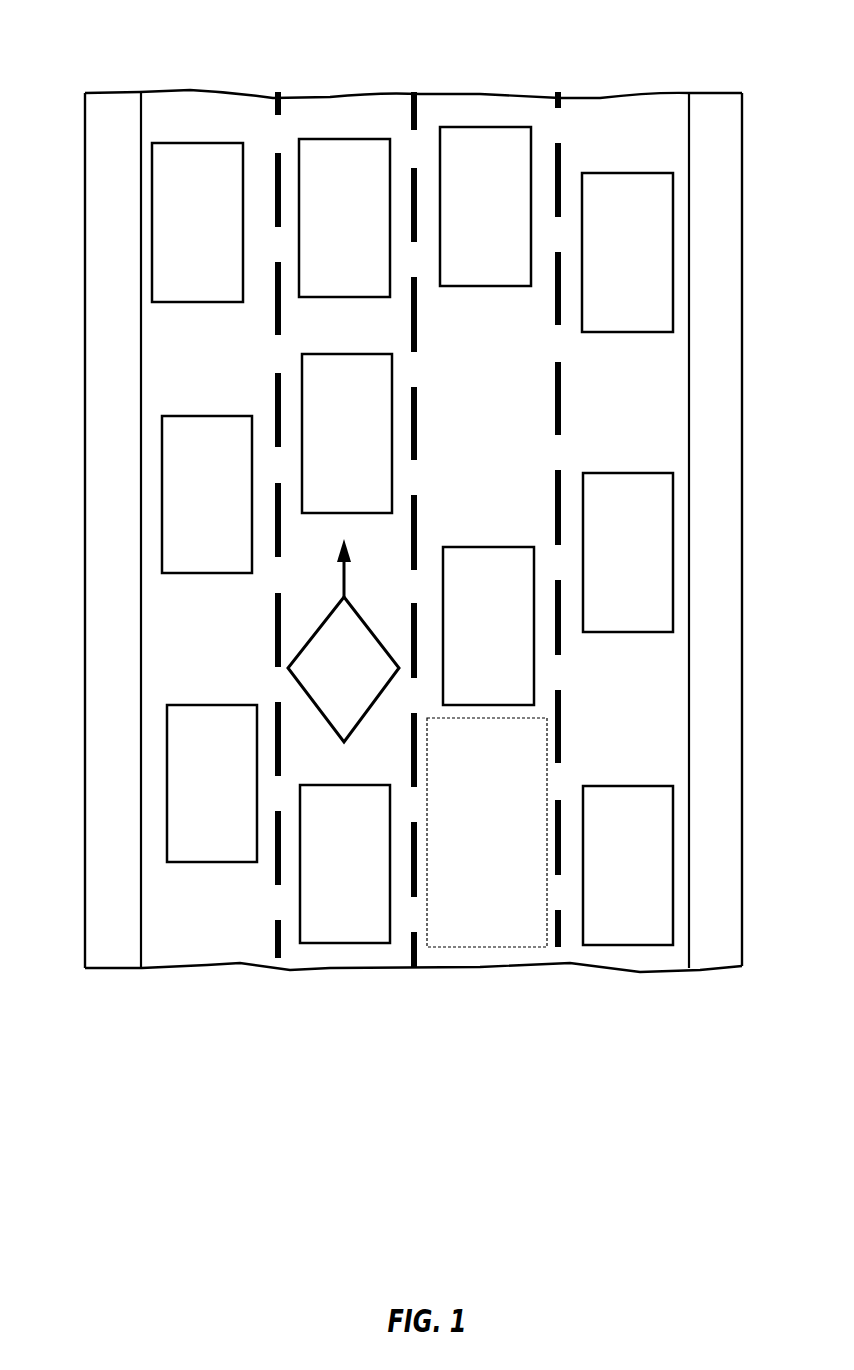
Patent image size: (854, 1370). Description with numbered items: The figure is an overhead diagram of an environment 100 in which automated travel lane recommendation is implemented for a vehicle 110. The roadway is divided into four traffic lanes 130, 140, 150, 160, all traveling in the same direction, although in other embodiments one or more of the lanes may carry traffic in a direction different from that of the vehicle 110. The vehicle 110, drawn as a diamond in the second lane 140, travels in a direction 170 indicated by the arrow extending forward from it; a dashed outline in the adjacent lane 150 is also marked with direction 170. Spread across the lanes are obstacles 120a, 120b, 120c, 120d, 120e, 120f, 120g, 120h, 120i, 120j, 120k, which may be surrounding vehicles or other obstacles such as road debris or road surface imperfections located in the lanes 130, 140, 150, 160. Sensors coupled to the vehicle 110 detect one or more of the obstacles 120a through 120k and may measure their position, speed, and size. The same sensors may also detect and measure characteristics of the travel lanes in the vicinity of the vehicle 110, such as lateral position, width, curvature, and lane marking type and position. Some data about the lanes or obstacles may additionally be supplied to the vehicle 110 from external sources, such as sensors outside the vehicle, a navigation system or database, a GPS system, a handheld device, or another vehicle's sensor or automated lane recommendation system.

The environment 100 is at (117, 66).
The vehicle 110 is at (327, 689).
The obstacle 120a is at (175, 246).
The obstacle 120b is at (321, 242).
The obstacle 120c is at (462, 231).
The obstacle 120d is at (604, 276).
The obstacle 120e is at (184, 519).
The obstacle 120f is at (324, 456).
The obstacle 120g is at (605, 576).
The obstacle 120h is at (466, 654).
The obstacle 120i is at (190, 807).
The obstacle 120j is at (323, 887).
The obstacle 120k is at (605, 889).
The traffic lane 130 is at (207, 957).
The traffic lane 140 is at (343, 960).
The traffic lane 150 is at (488, 961).
The traffic lane 160 is at (640, 953).
The direction 170 is at (346, 574).